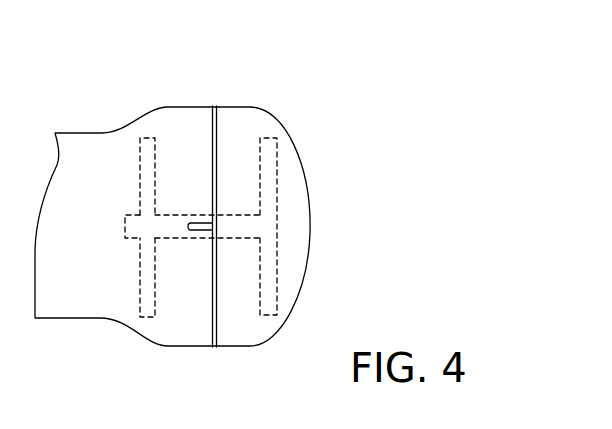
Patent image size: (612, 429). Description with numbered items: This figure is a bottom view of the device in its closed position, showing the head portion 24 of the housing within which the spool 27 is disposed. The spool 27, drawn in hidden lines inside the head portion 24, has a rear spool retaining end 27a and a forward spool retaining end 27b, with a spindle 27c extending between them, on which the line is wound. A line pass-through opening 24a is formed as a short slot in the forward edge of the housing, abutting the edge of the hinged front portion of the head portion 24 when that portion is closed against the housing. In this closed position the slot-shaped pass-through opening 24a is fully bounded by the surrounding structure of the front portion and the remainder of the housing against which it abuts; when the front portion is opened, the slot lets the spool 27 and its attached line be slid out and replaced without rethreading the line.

The head portion 24 is at (295, 89).
The line pass-through opening 24a is at (200, 230).
The spool 27 is at (293, 209).
The rear spool retaining end 27a is at (155, 175).
The forward spool retaining end 27b is at (331, 226).
The spindle 27c is at (223, 213).